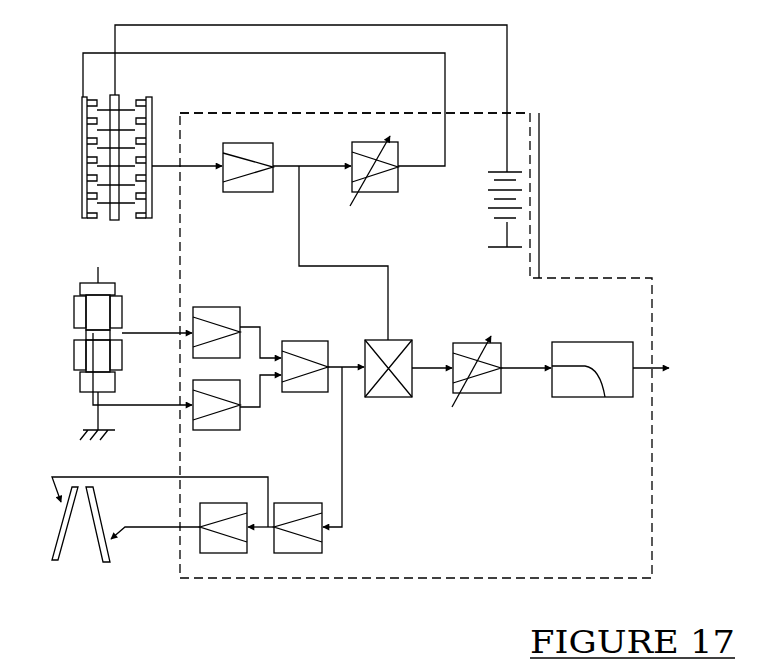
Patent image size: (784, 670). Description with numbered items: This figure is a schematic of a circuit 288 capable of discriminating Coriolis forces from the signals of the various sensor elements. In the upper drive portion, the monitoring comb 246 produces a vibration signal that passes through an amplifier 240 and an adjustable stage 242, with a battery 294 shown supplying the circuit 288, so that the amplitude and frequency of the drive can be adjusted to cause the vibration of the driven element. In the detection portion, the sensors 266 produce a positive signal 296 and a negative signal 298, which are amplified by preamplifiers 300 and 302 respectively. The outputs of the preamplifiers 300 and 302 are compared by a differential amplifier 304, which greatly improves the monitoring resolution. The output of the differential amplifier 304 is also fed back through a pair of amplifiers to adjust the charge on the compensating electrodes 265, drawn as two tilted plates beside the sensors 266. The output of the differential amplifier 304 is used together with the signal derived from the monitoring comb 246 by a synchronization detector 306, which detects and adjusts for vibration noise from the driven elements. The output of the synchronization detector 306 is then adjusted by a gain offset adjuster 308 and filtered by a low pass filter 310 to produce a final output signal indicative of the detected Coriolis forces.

The monitoring comb 246 is at (112, 95).
The amplifier 240 is at (253, 195).
The variable gain stage 242 is at (375, 196).
The circuit 288 is at (466, 111).
The battery 294 is at (512, 165).
The sensors 266 is at (71, 362).
The positive signal 296 is at (170, 328).
The negative signal 298 is at (167, 423).
The preamplifier 300 is at (213, 304).
The preamplifier 302 is at (214, 433).
The differential amplifier 304 is at (306, 338).
The synchronization detector 306 is at (399, 338).
The gain offset adjuster 308 is at (481, 396).
The low pass filter 310 is at (579, 339).
The compensating electrodes 265 is at (68, 553).